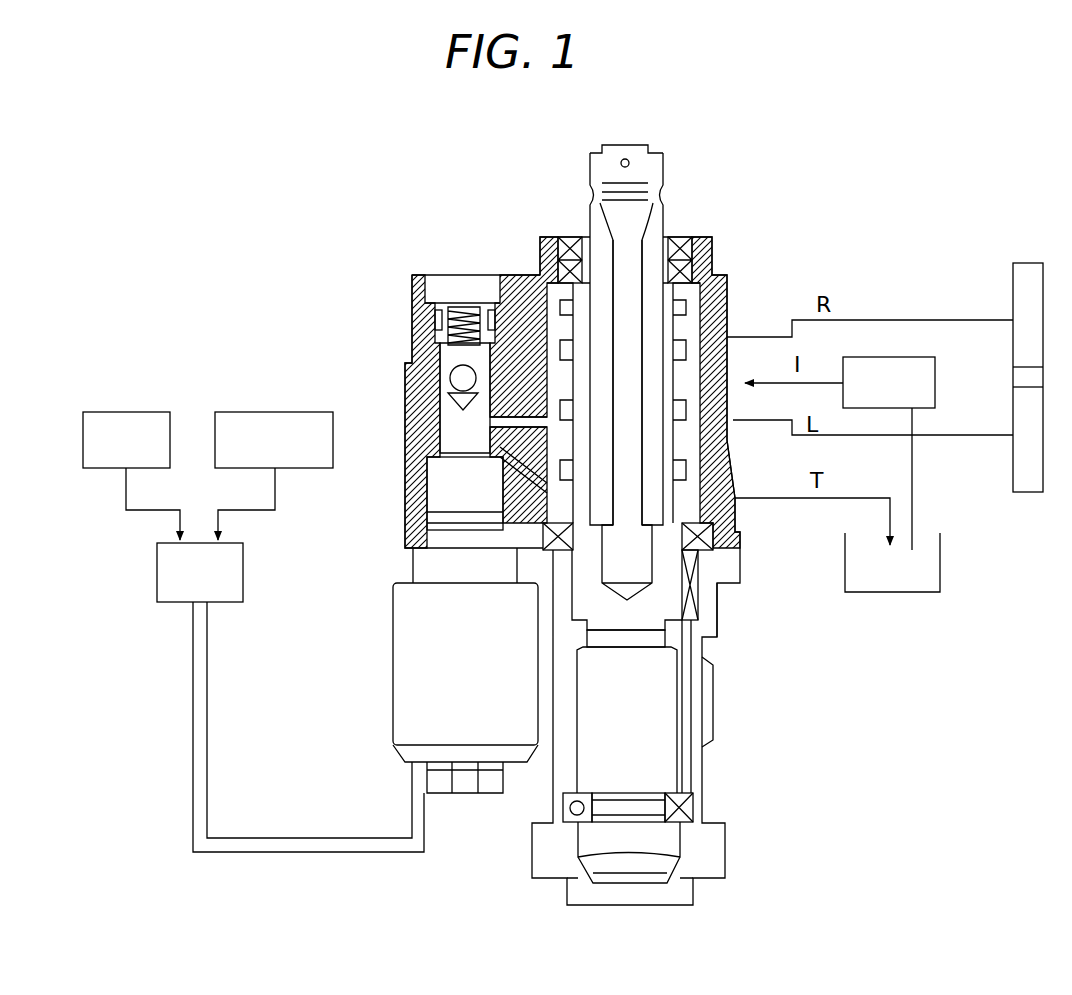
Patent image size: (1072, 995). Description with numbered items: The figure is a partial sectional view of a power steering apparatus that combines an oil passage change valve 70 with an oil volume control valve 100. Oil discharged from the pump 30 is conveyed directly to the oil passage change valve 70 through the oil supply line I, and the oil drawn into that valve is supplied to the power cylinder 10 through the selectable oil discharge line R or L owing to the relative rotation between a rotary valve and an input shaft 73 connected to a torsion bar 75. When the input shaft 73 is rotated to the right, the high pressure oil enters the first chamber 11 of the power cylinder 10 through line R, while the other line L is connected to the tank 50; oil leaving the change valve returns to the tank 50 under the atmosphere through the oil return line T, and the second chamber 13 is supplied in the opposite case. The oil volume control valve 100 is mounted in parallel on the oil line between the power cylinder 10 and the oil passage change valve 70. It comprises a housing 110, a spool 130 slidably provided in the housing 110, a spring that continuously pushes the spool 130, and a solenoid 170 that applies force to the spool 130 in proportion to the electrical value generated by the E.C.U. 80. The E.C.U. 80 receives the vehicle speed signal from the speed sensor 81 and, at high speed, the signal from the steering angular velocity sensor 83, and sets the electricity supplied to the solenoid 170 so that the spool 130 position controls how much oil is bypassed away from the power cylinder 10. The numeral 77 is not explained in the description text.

The power cylinder 10 is at (1003, 258).
The first chamber 11 is at (1025, 292).
The second chamber 13 is at (1025, 470).
The pump 30 is at (910, 382).
The tank 50 is at (892, 582).
The oil passage change valve 70 is at (700, 175).
The input shaft 73 is at (592, 215).
The torsion bar 75 is at (632, 147).
The valve housing 77 is at (720, 270).
The E.C.U. 80 is at (220, 572).
The speed sensor 81 is at (126, 424).
The steering angular velocity sensor 83 is at (274, 425).
The oil volume control valve 100 is at (400, 268).
The housing 110 is at (420, 320).
The spool 130 is at (440, 365).
The solenoid 170 is at (415, 640).